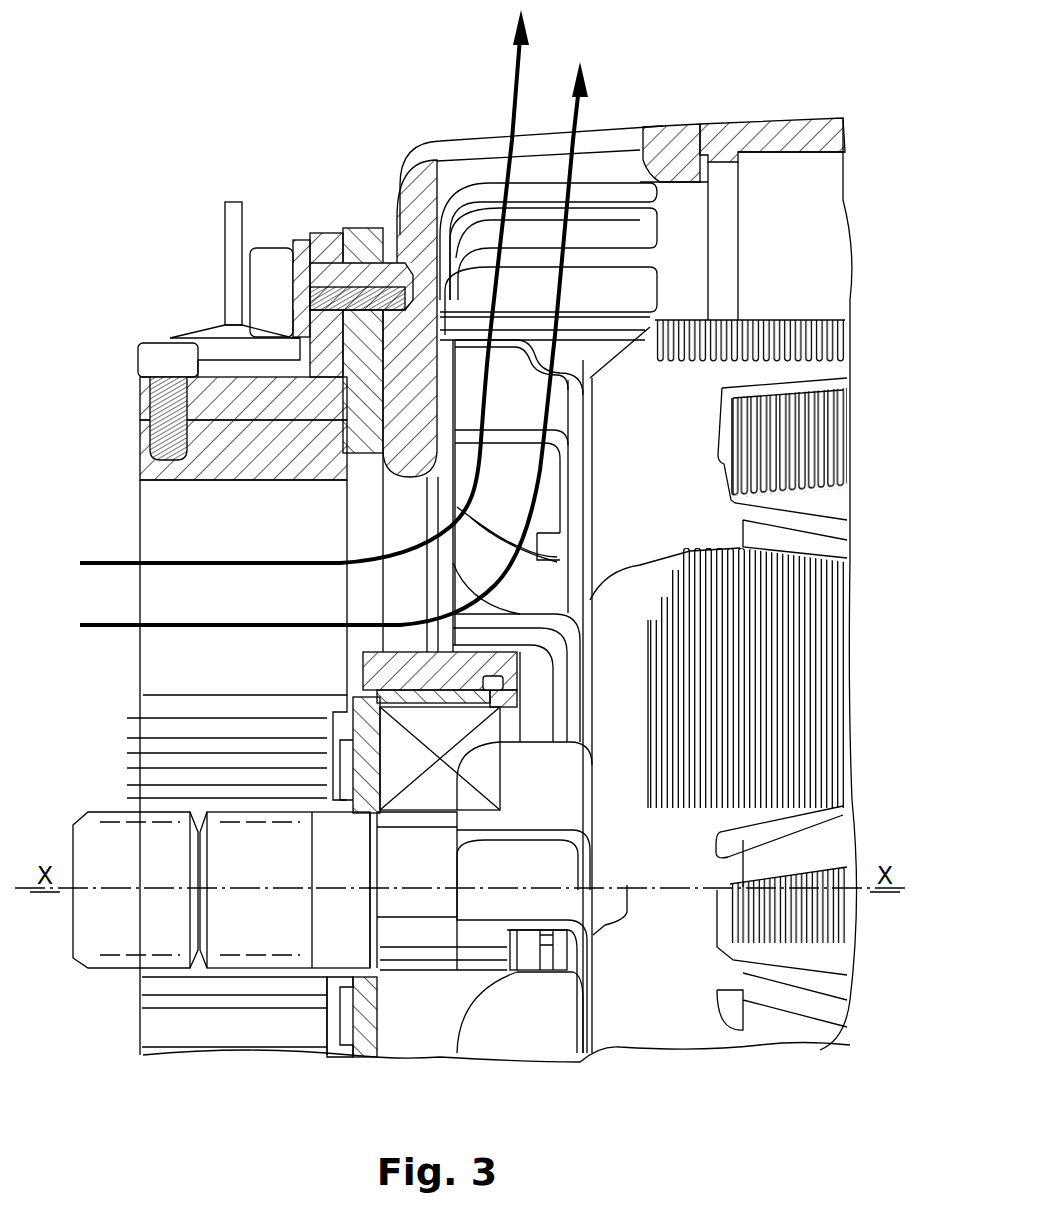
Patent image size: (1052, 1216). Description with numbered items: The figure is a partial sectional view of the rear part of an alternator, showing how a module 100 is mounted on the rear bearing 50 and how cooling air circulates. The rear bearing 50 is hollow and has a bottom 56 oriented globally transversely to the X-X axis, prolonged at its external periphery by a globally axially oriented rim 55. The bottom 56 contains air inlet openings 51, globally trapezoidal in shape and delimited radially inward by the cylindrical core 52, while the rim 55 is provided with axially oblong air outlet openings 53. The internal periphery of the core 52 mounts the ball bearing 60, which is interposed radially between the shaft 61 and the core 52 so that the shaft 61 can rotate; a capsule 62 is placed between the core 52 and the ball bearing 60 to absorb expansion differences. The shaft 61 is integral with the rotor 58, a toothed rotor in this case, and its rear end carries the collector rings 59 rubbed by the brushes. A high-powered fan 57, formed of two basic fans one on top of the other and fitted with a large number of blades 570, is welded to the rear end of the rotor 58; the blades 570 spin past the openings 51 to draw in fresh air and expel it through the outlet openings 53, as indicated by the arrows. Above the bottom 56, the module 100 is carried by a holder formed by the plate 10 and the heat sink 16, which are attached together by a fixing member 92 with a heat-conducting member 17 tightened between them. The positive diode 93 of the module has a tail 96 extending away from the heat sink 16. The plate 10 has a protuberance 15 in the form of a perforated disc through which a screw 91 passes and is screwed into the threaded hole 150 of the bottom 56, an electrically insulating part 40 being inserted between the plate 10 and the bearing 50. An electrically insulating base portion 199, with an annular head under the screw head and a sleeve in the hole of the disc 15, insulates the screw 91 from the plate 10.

The plate 10 is at (140, 385).
The protuberance 15 is at (313, 232).
The heat sink 16 is at (118, 466).
The heat-conducting member 17 is at (140, 425).
The electrically insulating part 40 is at (402, 215).
The rear bearing 50 is at (718, 90).
The air inlet openings 51 is at (403, 653).
The cylindrical core 52 is at (390, 667).
The air outlet openings 53 is at (652, 128).
The rim 55 is at (790, 124).
The bottom 56 is at (355, 228).
The fan 57 is at (607, 978).
The rotor 58 is at (683, 1020).
The collector rings 59 is at (113, 930).
The ball bearing 60 is at (437, 792).
The shaft 61 is at (403, 945).
The capsule 62 is at (383, 803).
The fixing member 91 is at (275, 252).
The fixing member 92 is at (155, 355).
The positive diode 93 is at (210, 330).
The tail 96 is at (222, 228).
The module 100 is at (223, 175).
The threaded hole 150 is at (425, 170).
The electrically insulating base portion 199 is at (301, 208).
The blades 570 is at (540, 905).